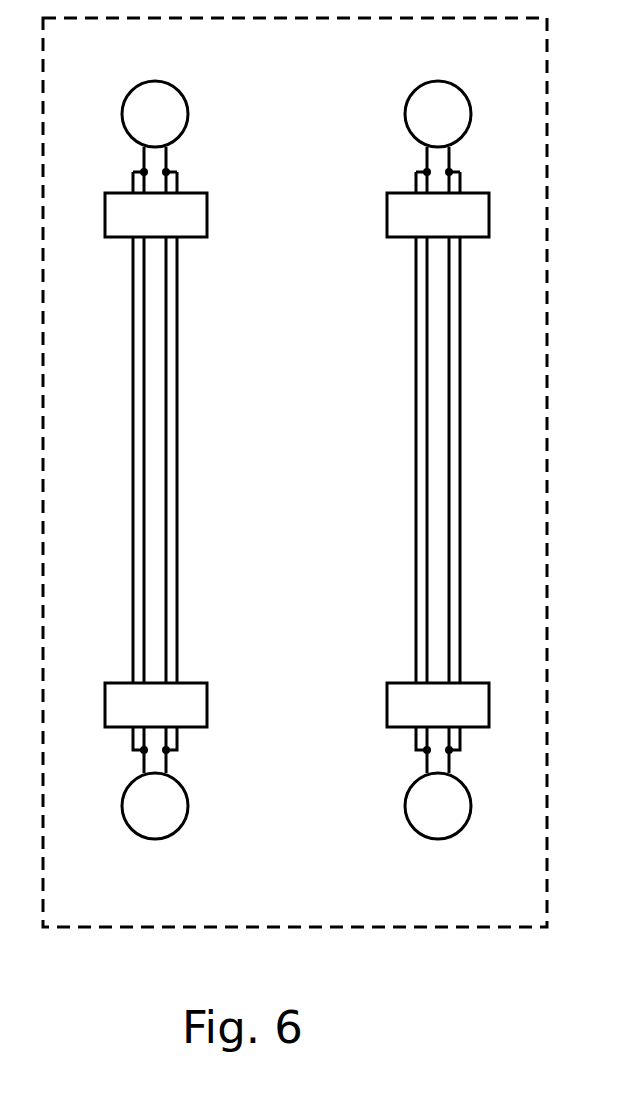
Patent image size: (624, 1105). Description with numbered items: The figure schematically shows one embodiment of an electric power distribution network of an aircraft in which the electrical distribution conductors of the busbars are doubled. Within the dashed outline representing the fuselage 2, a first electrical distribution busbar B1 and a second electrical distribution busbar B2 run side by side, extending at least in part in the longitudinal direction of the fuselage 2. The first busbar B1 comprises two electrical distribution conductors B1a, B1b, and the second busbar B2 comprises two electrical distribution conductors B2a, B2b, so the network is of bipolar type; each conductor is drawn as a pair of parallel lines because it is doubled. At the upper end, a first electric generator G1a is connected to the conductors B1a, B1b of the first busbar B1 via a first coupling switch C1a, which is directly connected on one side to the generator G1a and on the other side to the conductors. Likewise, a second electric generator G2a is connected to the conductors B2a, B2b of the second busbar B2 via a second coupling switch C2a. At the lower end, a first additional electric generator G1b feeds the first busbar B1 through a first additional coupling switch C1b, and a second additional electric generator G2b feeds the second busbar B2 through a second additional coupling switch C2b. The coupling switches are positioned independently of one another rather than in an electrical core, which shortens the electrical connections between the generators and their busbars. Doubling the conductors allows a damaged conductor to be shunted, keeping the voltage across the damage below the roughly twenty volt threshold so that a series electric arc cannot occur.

The fuselage 2 is at (547, 120).
The first electrical distribution busbar B1 is at (204, 460).
The electrical distribution conductor B1a is at (167, 413).
The electrical distribution conductor B1b is at (134, 492).
The second electrical distribution busbar B2 is at (390, 460).
The electrical distribution conductor B2a is at (427, 417).
The electrical distribution conductor B2b is at (460, 490).
The first coupling switch C1a is at (205, 192).
The first additional coupling switch C1b is at (205, 682).
The second coupling switch C2a is at (400, 192).
The second additional coupling switch C2b is at (400, 682).
The first electric generator G1a is at (188, 116).
The first additional electric generator G1b is at (188, 808).
The second electric generator G2a is at (405, 117).
The second additional electric generator G2b is at (405, 808).